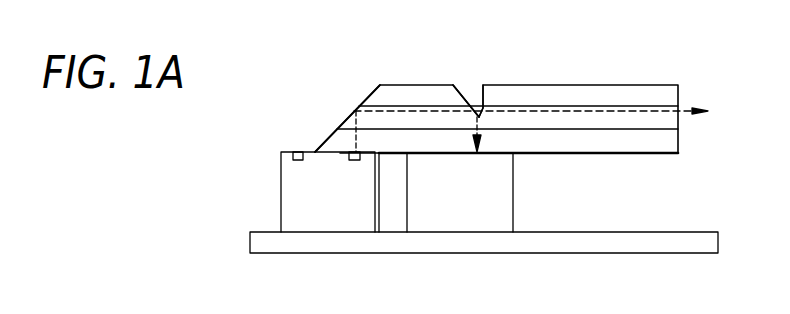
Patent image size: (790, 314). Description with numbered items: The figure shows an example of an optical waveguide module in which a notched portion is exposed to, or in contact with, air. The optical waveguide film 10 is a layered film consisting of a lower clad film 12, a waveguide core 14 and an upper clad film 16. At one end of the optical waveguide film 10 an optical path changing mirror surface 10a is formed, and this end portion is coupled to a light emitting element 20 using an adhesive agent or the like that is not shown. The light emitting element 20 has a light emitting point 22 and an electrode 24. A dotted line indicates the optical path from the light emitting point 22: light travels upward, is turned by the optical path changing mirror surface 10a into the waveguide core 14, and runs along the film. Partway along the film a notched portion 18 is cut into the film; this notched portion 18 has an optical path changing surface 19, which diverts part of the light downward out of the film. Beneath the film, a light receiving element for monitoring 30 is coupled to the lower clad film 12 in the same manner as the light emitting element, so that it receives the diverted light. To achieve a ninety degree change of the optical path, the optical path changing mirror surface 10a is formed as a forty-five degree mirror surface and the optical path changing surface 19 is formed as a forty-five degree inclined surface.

The optical waveguide film 10 is at (654, 79).
The optical path changing mirror surface 10a is at (367, 95).
The lower clad film 12 is at (672, 142).
The waveguide core 14 is at (672, 118).
The upper clad film 16 is at (672, 95).
The notched portion 18 is at (472, 85).
The optical path changing surface 19 is at (476, 112).
The light emitting element 20 is at (298, 201).
The light emitting point 22 is at (356, 162).
The electrode 24 is at (298, 148).
The light receiving element for monitoring 30 is at (462, 218).